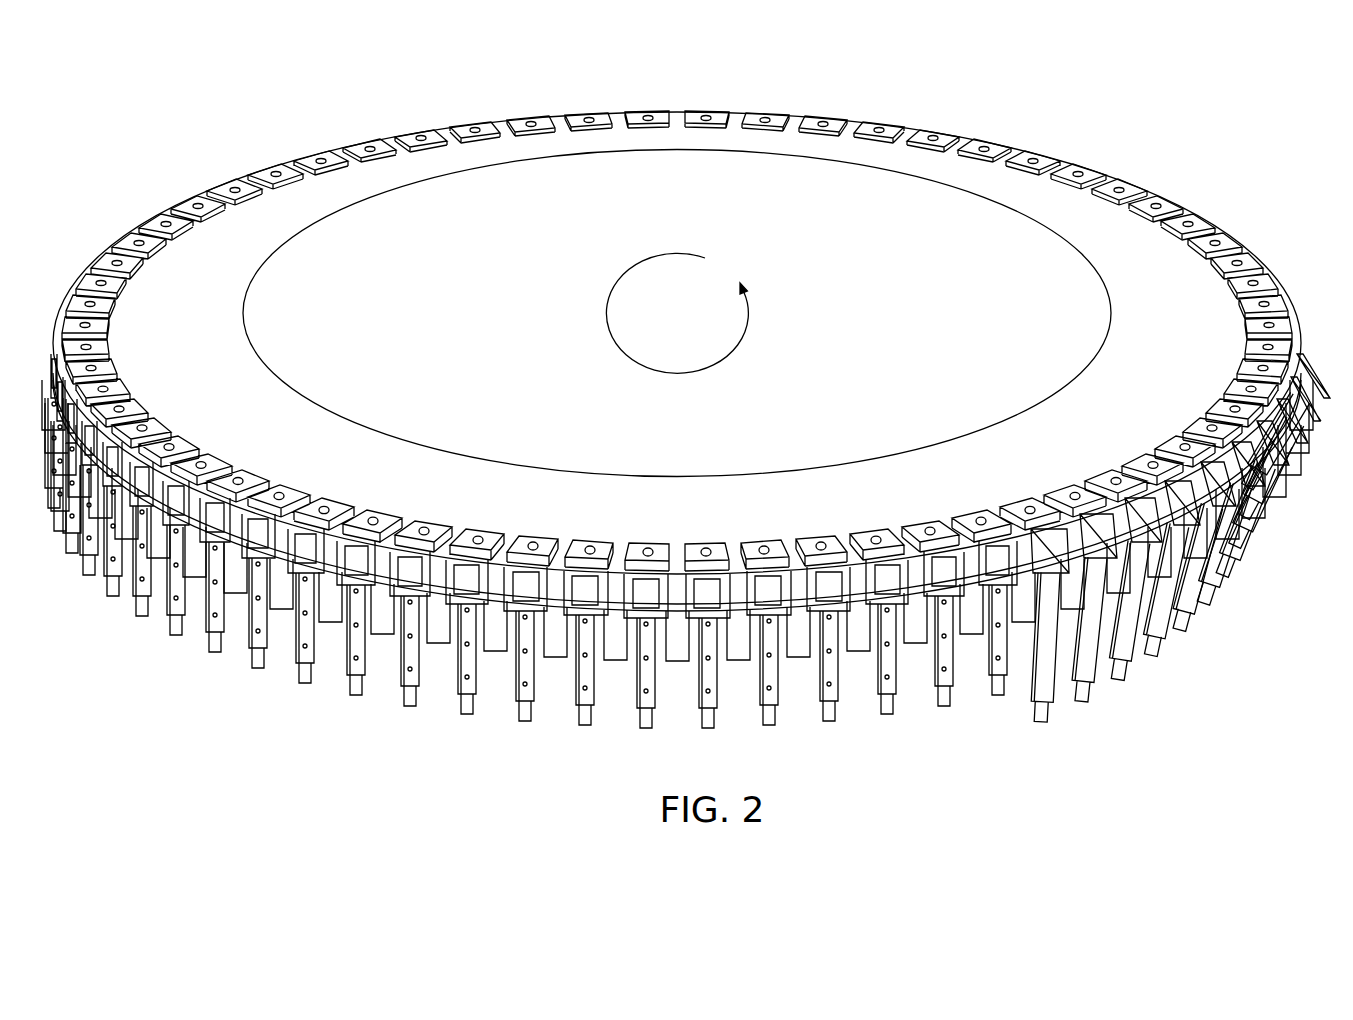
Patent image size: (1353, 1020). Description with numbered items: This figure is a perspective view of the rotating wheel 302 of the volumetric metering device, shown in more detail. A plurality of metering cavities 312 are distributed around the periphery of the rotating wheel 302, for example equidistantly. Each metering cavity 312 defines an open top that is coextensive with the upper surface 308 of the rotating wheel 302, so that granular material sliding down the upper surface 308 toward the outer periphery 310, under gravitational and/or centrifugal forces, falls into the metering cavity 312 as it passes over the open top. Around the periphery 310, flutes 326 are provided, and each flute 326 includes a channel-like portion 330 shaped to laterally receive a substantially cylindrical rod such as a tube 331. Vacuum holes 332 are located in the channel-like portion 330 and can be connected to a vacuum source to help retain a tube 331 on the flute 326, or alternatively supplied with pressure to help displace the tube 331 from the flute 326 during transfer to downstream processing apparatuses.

The rotating wheel 302 is at (391, 116).
The upper surface 308 is at (1010, 232).
The outer periphery 310 is at (1238, 247).
The metering cavities 312 is at (1192, 236).
The flute 326 is at (687, 548).
The channel-like portion 330 is at (951, 655).
The tube 331 is at (1105, 695).
The vacuum holes 332 is at (893, 675).